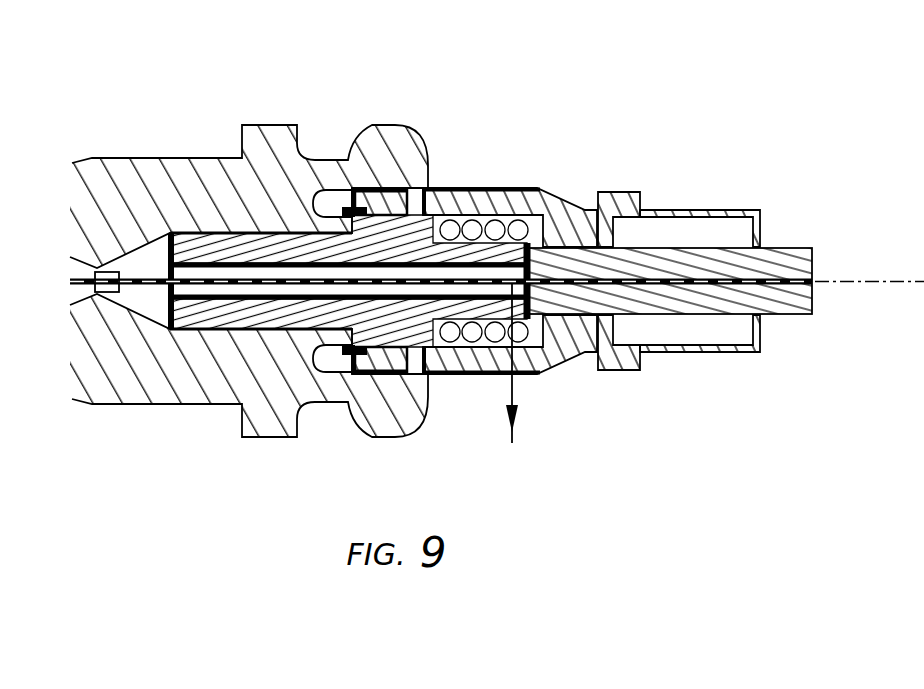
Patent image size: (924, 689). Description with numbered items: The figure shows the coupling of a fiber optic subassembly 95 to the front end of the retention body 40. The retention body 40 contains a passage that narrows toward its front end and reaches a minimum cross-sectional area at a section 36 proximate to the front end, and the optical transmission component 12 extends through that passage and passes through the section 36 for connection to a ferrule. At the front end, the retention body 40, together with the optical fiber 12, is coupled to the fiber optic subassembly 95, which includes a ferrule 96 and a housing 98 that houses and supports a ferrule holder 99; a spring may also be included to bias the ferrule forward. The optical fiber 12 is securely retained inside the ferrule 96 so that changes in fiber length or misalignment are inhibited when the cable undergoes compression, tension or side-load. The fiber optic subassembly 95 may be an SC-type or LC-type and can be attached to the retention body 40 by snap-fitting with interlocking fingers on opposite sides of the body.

The optical transmission component 12 is at (776, 281).
The section 36 is at (103, 270).
The retention body 40 is at (207, 384).
The fiber optic subassembly 95 is at (479, 172).
The ferrule 96 is at (813, 296).
The housing 98 is at (325, 357).
The ferrule holder 99 is at (465, 352).